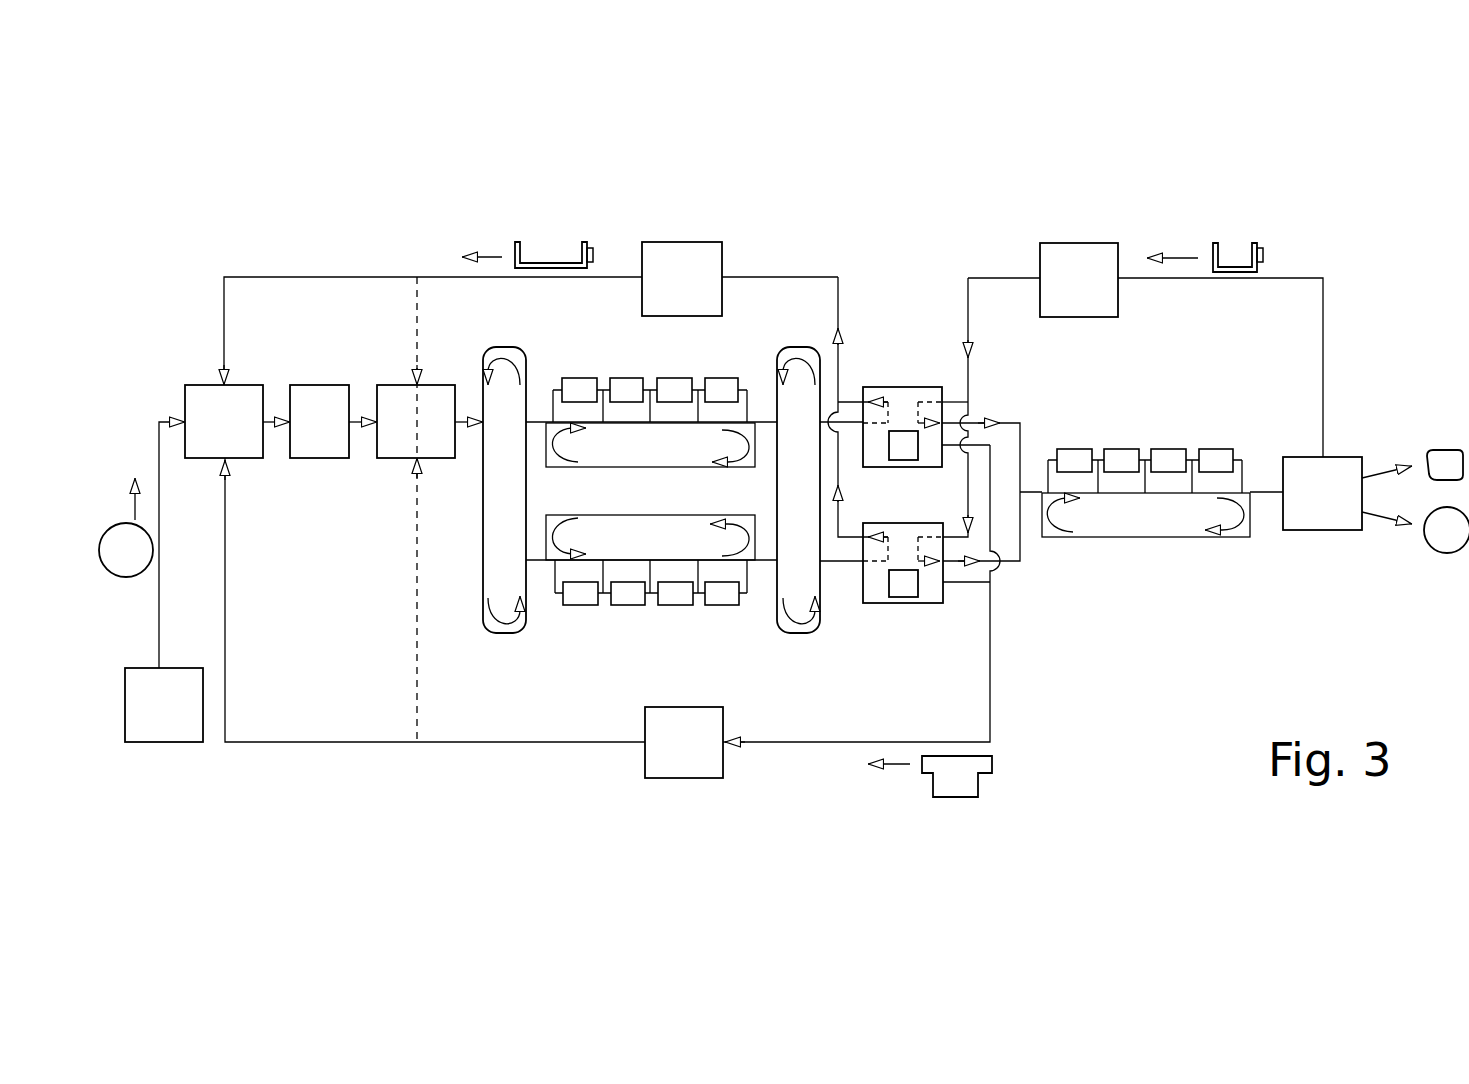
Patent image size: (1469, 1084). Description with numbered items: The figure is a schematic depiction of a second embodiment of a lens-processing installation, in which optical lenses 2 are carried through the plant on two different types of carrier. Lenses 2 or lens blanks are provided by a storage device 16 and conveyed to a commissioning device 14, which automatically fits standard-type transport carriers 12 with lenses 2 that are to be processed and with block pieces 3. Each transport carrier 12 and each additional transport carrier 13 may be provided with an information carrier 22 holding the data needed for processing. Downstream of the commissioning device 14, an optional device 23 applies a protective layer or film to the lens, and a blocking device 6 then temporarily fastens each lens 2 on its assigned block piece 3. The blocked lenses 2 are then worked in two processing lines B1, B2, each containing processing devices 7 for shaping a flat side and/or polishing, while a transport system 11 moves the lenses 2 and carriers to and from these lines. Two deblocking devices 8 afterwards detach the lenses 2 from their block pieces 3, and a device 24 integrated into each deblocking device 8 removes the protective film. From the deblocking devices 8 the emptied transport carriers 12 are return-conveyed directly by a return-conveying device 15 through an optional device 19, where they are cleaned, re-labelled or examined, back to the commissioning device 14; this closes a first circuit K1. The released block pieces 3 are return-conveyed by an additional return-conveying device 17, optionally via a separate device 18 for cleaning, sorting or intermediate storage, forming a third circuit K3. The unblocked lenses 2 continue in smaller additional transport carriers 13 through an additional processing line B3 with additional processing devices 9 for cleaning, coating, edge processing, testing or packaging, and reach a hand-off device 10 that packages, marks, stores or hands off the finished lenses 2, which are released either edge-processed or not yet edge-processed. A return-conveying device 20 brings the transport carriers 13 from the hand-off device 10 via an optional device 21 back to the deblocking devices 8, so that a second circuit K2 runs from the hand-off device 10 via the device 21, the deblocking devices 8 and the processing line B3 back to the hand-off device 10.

The optical lens 2 is at (130, 567).
The block piece 3 is at (980, 778).
The blocking device 6 is at (423, 400).
The processing device 7 is at (708, 395).
The deblocking device 8 is at (935, 395).
The additional processing device 9 is at (1205, 458).
The hand-off device 10 is at (1352, 473).
The transport system 11 is at (535, 616).
The transport carrier 12 is at (540, 260).
The additional transport carrier 13 is at (1232, 263).
The commissioning device 14 is at (243, 402).
The return-conveying device 15 is at (349, 274).
The storage device 16 is at (172, 733).
The return-conveying device for block pieces 17 is at (486, 749).
The device for block pieces 18 is at (690, 765).
The device for transport carriers 19 is at (682, 252).
The return-conveying device 20 is at (1329, 372).
The optional device 21 is at (1083, 253).
The information carrier 22 is at (592, 252).
The device for applying the protective layer or protective film 23 is at (327, 400).
The device for removing the protective layer or protective film 24 is at (903, 437).
The first circuit K1 is at (240, 322).
The second circuit K2 is at (982, 327).
The third circuit K3 is at (239, 698).
The first processing line B1 is at (606, 366).
The second processing line B2 is at (617, 614).
The third processing line B3 is at (1129, 436).